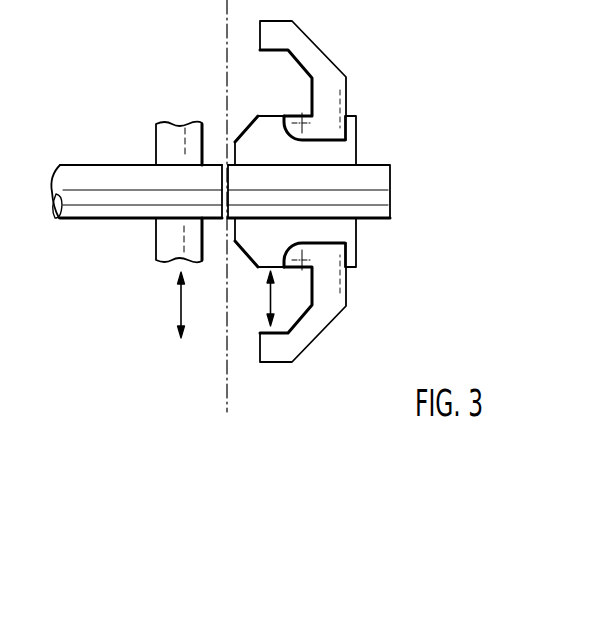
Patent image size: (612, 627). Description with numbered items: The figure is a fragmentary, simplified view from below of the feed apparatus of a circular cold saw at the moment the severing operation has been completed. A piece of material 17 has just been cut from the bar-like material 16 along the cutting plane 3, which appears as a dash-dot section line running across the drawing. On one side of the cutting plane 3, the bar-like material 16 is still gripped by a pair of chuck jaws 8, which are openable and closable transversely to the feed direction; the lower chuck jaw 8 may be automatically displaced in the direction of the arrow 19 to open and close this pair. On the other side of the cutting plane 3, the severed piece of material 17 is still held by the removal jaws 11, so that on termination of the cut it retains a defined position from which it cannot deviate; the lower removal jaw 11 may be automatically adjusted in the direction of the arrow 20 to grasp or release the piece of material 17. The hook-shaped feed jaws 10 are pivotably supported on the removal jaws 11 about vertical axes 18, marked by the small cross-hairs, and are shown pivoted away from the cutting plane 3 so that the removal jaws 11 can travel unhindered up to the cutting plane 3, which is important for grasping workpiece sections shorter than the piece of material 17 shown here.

The cutting plane 3 is at (227, 397).
The chuck jaws 8 is at (175, 135).
The feed jaws 10 is at (305, 50).
The removal jaws 11 is at (345, 155).
The bar-like material 16 is at (99, 180).
The piece of material 17 is at (378, 192).
The vertical axes 18 is at (300, 120).
The arrow 19 is at (182, 299).
The arrow 20 is at (270, 301).